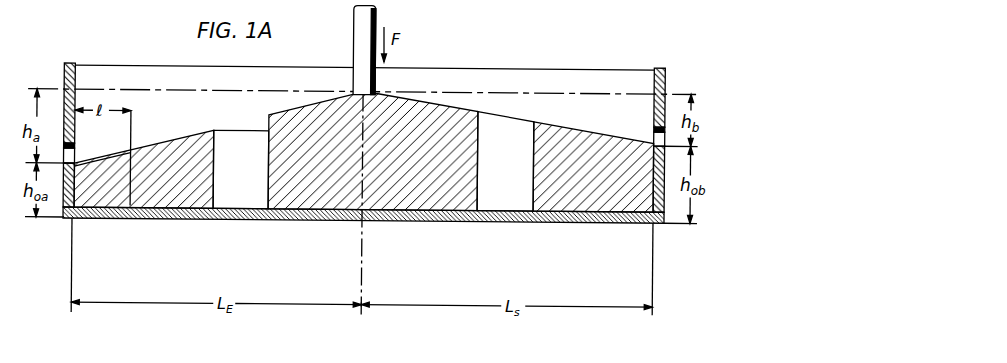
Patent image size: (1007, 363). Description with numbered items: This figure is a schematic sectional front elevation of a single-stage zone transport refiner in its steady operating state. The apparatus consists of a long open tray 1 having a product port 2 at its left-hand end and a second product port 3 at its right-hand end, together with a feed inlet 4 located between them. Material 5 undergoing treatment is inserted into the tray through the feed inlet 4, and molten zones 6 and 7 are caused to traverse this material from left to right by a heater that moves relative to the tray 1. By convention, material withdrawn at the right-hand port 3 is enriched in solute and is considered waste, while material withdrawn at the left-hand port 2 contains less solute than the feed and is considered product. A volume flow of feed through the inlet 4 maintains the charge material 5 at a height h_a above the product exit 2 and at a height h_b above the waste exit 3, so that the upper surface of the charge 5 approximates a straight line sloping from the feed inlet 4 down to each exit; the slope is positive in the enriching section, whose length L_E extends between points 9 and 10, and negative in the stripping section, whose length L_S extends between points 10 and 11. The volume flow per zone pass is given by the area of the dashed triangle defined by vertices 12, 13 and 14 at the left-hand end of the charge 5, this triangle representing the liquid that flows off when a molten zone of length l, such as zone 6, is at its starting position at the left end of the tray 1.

The open tray 1 is at (63, 69).
The product port 2 is at (75, 153).
The second product port 3 is at (652, 129).
The feed inlet 4 is at (377, 18).
The material undergoing treatment 5 is at (190, 133).
The molten zone 6 is at (238, 131).
The molten zone 7 is at (512, 123).
The end point of enriching section 9 is at (71, 275).
The feed position point 10 is at (365, 320).
The end point of stripping section 11 is at (653, 281).
The vertex of dashed triangle 12 is at (79, 168).
The vertex of dashed triangle 13 is at (81, 164).
The vertex of dashed triangle 14 is at (130, 149).